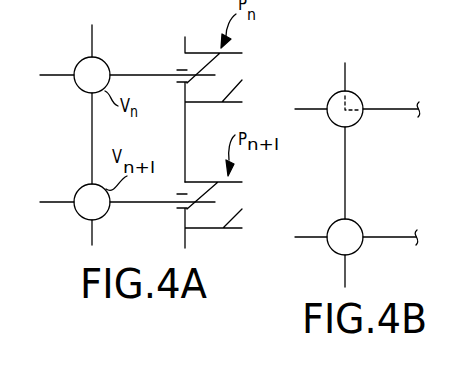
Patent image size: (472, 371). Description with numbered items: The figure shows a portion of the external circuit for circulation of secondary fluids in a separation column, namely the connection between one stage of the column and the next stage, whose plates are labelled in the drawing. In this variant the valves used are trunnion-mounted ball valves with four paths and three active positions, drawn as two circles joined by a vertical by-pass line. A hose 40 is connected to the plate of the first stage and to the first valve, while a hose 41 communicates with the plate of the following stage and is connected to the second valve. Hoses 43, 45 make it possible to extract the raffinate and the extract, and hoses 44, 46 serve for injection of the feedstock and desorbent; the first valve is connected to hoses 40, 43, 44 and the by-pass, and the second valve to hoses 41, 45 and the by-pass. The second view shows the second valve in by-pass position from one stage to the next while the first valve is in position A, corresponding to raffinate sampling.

In FIG. 4A, the hose 40 is at (127, 75).
In FIG. 4A, the hose 41 is at (138, 204).
In FIG. 4A, the hose 43 is at (93, 41).
In FIG. 4B, the hose 43 is at (347, 72).
In FIG. 4A, the hose 44 is at (50, 73).
In FIG. 4A, the hose 45 is at (52, 200).
In FIG. 4A, the hose 46 is at (92, 238).